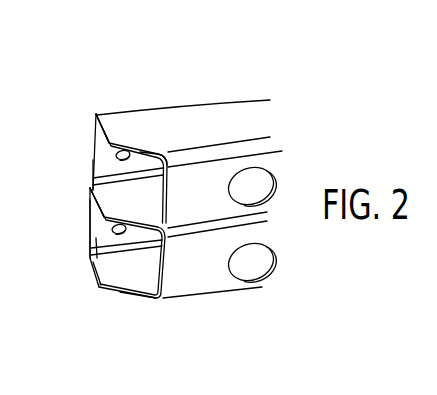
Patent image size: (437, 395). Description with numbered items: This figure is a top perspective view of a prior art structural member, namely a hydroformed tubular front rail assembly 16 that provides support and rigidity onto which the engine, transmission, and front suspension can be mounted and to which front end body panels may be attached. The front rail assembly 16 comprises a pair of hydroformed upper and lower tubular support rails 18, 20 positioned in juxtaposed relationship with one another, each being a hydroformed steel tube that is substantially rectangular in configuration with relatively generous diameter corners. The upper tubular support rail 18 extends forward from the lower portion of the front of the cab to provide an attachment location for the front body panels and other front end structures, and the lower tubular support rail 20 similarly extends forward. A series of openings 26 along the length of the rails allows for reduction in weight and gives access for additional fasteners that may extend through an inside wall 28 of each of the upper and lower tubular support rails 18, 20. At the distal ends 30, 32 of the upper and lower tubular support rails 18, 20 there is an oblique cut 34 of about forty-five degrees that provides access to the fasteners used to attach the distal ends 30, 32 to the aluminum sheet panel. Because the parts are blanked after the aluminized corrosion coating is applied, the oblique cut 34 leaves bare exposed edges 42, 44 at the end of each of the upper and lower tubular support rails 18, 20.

The front rail assembly 16 is at (167, 87).
The upper tubular support rail 18 is at (233, 112).
The lower tubular support rail 20 is at (203, 282).
The openings 26 is at (260, 250).
The inside wall 28 is at (101, 148).
The distal end of upper tubular support rail 30 is at (99, 120).
The distal end of lower tubular support rail 32 is at (95, 288).
The oblique cut 34 is at (145, 155).
The bare exposed edge 42 is at (96, 167).
The bare exposed edge 44 is at (87, 220).